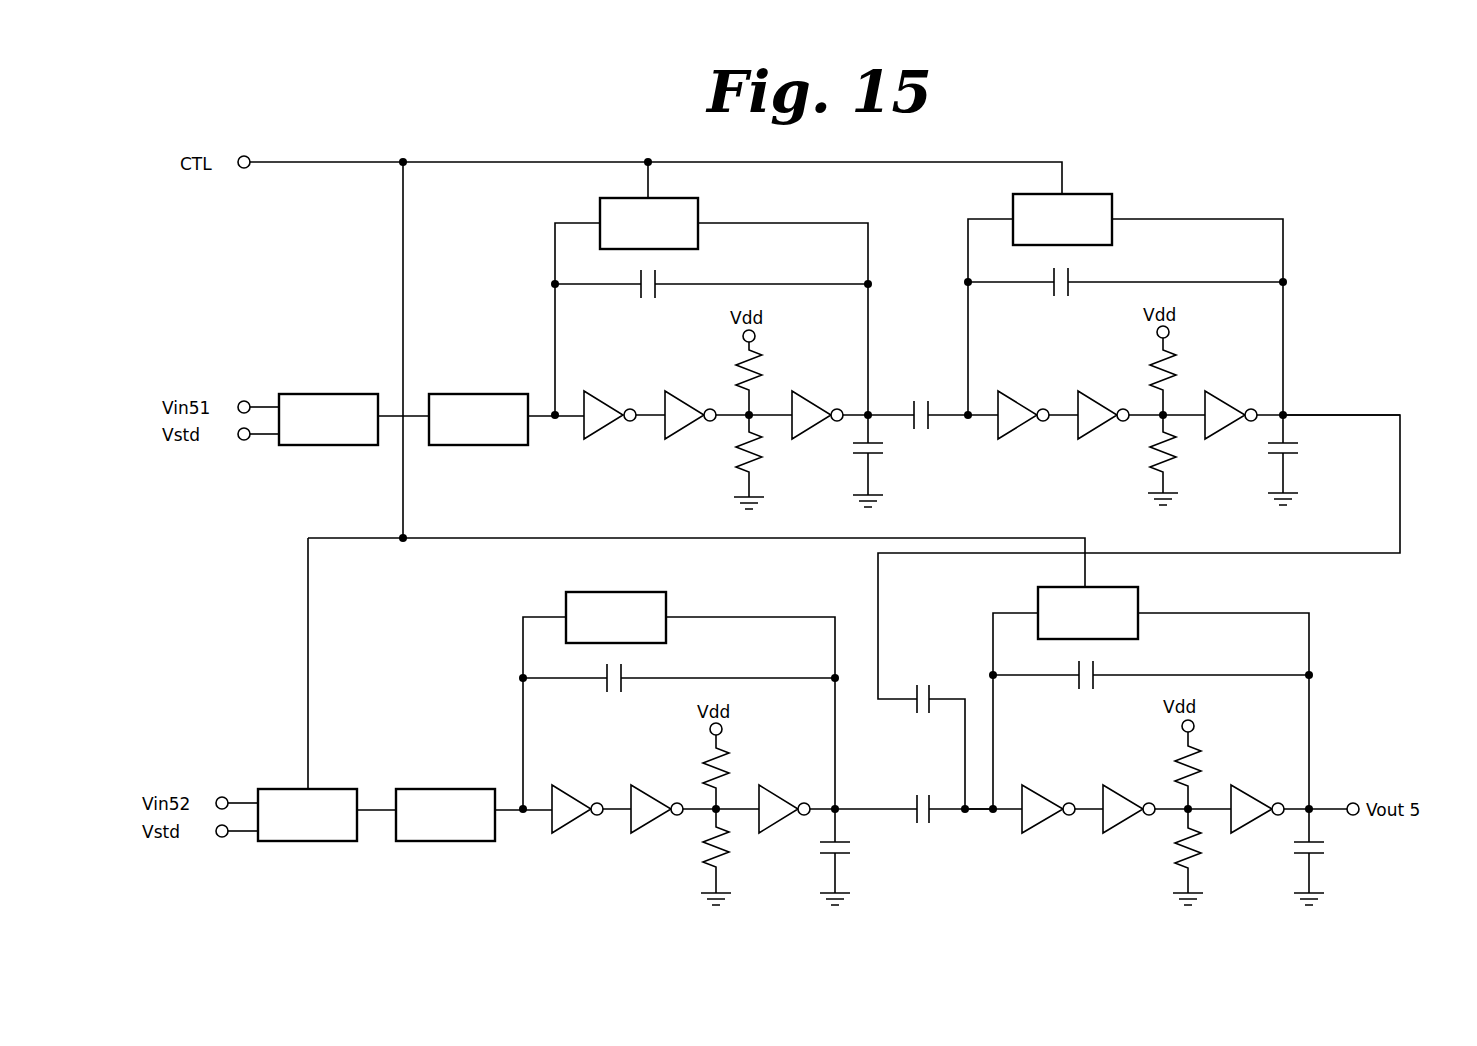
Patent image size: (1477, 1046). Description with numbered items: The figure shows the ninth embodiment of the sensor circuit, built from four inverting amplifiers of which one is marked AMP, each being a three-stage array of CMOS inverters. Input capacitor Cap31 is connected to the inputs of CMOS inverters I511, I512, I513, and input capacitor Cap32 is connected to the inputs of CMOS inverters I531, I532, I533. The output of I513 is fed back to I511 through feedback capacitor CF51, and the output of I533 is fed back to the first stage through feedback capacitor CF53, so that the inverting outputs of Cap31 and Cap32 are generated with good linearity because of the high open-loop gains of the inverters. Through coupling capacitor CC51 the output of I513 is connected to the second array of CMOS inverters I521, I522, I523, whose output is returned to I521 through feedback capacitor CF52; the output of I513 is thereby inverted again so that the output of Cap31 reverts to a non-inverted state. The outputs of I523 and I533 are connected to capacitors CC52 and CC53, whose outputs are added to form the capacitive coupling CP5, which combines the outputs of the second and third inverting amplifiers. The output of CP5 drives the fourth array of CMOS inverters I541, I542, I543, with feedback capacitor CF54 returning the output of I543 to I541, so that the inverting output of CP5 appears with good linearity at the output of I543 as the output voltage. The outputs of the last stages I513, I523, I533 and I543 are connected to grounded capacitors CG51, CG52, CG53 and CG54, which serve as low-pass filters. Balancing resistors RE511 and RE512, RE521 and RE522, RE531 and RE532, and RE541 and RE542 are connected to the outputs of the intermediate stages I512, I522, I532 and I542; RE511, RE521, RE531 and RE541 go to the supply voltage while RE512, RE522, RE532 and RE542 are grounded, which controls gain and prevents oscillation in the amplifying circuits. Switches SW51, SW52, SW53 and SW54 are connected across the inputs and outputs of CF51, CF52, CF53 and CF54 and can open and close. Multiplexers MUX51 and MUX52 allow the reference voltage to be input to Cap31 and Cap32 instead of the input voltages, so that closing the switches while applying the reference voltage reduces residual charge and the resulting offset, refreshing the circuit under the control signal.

The multiplexer MUX51 is at (328, 419).
The multiplexer MUX52 is at (307, 815).
The capacitor Cap31 is at (478, 419).
The capacitor Cap32 is at (445, 815).
The switch SW51 is at (649, 223).
The switch SW52 is at (1062, 219).
The switch SW53 is at (616, 617).
The switch SW54 is at (1088, 613).
The feedback capacitor CF51 is at (711, 302).
The feedback capacitor CF52 is at (1125, 299).
The feedback capacitor CF53 is at (679, 695).
The feedback capacitor CF54 is at (1151, 691).
The coupling capacitor CC51 is at (915, 402).
The capacitor CC52 is at (914, 686).
The capacitor CC53 is at (914, 796).
The grounded capacitor CG51 is at (899, 461).
The grounded capacitor CG52 is at (1311, 460).
The grounded capacitor CG53 is at (864, 857).
The grounded capacitor CG54 is at (1338, 857).
The balancing resistor RE511 is at (778, 372).
The balancing resistor RE512 is at (716, 462).
The balancing resistor RE521 is at (1191, 370).
The balancing resistor RE522 is at (1129, 460).
The balancing resistor RE531 is at (745, 766).
The balancing resistor RE532 is at (681, 857).
The balancing resistor RE541 is at (1216, 764).
The balancing resistor RE542 is at (1152, 857).
The CMOS inverter I511 is at (609, 405).
The CMOS inverter I512 is at (690, 405).
The CMOS inverter I513 is at (816, 430).
The CMOS inverter I521 is at (1022, 404).
The CMOS inverter I522 is at (1103, 404).
The CMOS inverter I523 is at (1228, 428).
The CMOS inverter I531 is at (576, 799).
The CMOS inverter I532 is at (657, 799).
The CMOS inverter I533 is at (781, 824).
The CMOS inverter I541 is at (1046, 798).
The CMOS inverter I542 is at (1126, 798).
The CMOS inverter I543 is at (1254, 823).
The inverting amplifier AMP is at (1364, 266).
The capacitive coupling CP5 is at (990, 845).